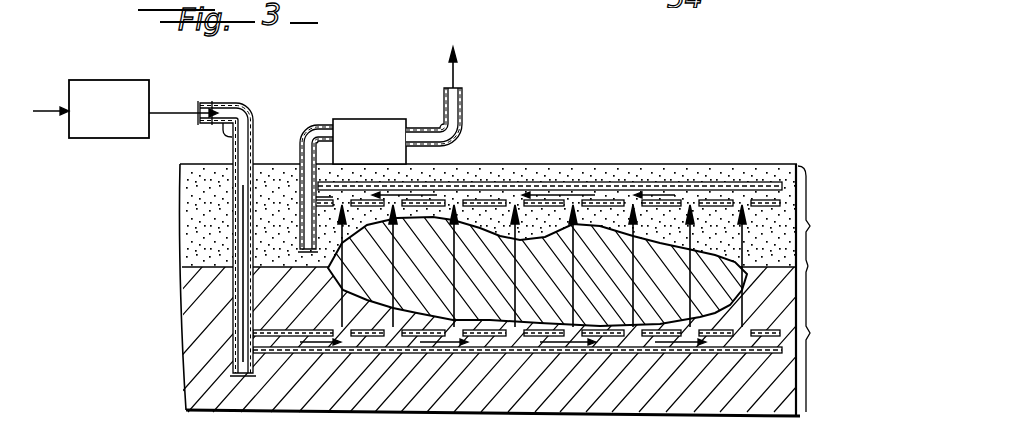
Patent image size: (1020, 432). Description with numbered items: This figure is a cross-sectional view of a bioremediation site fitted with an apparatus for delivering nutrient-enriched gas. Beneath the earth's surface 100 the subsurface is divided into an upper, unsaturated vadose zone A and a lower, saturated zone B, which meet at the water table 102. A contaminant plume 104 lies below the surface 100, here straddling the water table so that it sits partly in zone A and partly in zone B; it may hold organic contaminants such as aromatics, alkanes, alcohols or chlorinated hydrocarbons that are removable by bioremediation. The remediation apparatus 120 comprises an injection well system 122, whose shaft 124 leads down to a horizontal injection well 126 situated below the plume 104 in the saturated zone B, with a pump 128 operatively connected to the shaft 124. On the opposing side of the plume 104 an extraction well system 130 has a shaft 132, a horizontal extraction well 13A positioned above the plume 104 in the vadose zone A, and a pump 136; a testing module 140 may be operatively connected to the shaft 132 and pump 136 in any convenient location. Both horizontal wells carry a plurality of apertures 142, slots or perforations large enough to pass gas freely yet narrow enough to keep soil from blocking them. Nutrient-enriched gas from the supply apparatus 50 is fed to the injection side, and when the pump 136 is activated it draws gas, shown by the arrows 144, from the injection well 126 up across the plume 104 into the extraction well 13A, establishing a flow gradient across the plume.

The apparatus 50 is at (128, 126).
The earth's surface 100 is at (696, 158).
The water table 102 is at (800, 267).
The contaminant plume 104 is at (727, 328).
The remediation apparatus 120 is at (418, 88).
The injection well system 122 is at (226, 251).
The shaft 124 is at (232, 168).
The injection well 126 is at (284, 352).
The pump 128 is at (250, 121).
The extraction well system 130 is at (298, 178).
The shaft 132 is at (298, 246).
The extraction well 13A is at (474, 181).
The pump 136 is at (463, 126).
The testing module 140 is at (373, 119).
The apertures 142 is at (282, 331).
The arrows 144 is at (168, 108).
The vadose zone A is at (815, 216).
The saturated zone B is at (819, 339).